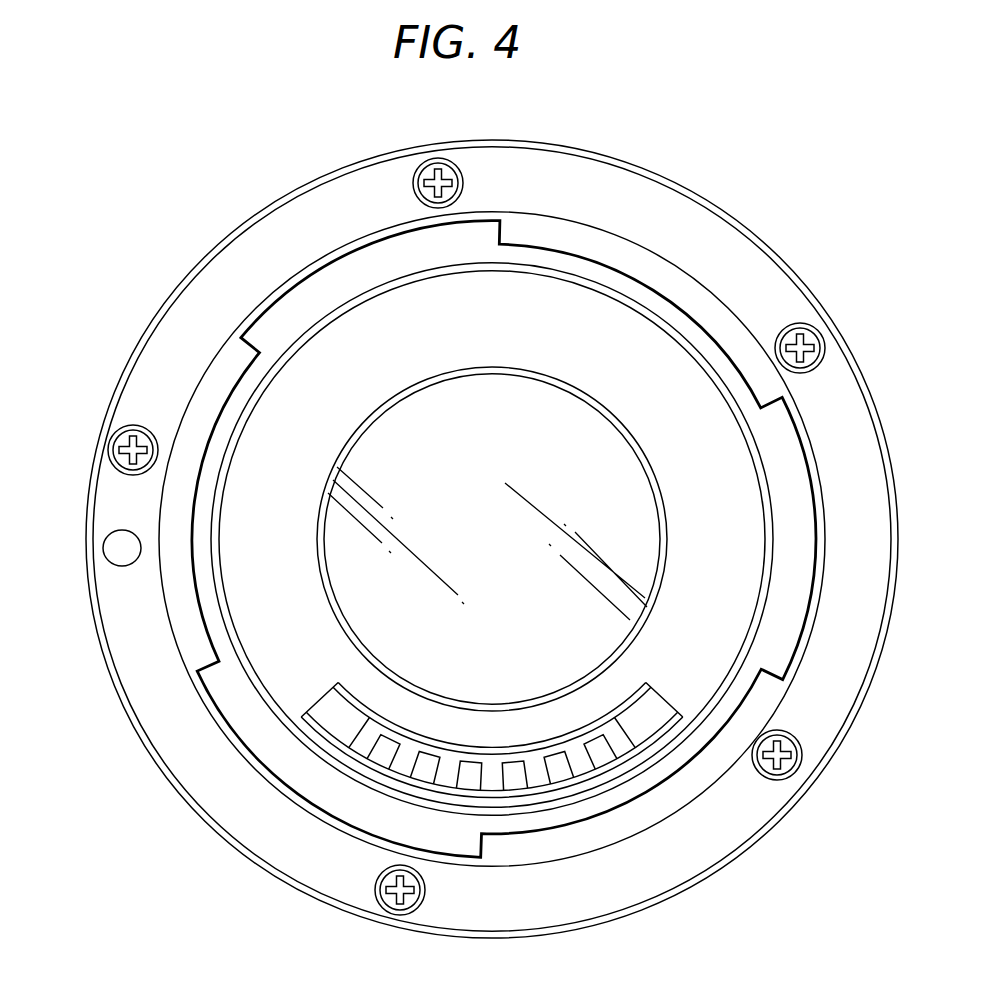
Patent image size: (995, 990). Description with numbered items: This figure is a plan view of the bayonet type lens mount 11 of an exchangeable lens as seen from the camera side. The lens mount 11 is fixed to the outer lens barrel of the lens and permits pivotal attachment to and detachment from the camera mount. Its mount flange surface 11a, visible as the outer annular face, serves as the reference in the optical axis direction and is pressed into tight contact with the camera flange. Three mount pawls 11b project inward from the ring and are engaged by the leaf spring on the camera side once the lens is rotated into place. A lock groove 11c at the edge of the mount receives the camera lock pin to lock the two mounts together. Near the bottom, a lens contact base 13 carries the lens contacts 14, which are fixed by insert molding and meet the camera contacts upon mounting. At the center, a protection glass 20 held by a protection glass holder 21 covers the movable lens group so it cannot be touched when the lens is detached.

The lens mount 11 is at (682, 200).
The mount flange surface 11a is at (550, 177).
The mount pawls 11b is at (393, 243).
The lock groove 11c is at (103, 560).
The lens contact base 13 is at (345, 732).
The lens contacts 14 is at (367, 753).
The protection glass 20 is at (560, 410).
The protection glass holder 21 is at (670, 377).